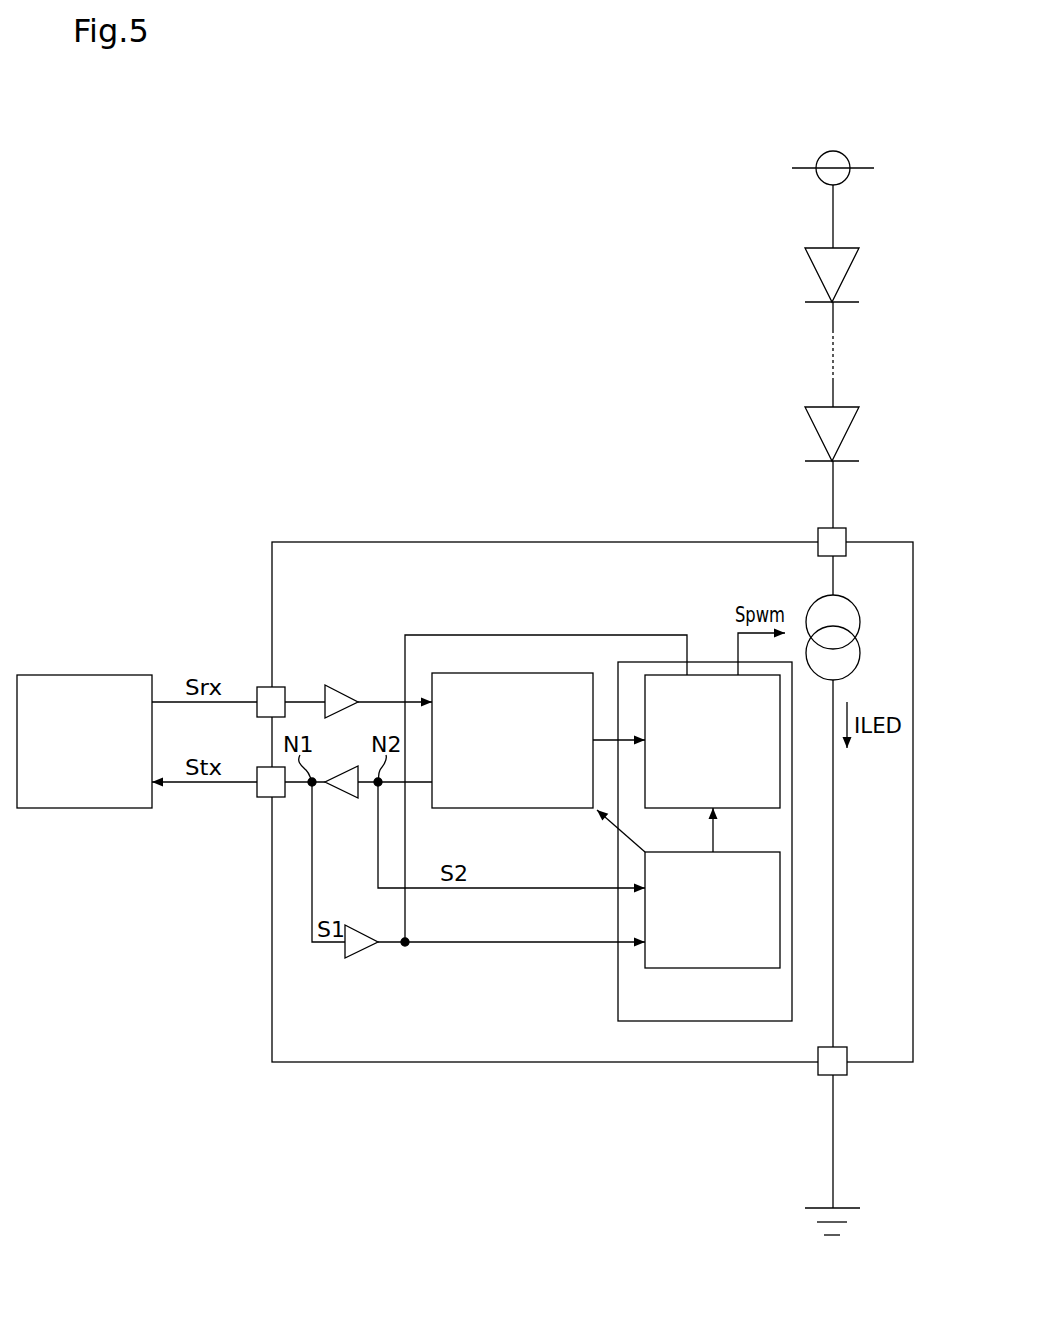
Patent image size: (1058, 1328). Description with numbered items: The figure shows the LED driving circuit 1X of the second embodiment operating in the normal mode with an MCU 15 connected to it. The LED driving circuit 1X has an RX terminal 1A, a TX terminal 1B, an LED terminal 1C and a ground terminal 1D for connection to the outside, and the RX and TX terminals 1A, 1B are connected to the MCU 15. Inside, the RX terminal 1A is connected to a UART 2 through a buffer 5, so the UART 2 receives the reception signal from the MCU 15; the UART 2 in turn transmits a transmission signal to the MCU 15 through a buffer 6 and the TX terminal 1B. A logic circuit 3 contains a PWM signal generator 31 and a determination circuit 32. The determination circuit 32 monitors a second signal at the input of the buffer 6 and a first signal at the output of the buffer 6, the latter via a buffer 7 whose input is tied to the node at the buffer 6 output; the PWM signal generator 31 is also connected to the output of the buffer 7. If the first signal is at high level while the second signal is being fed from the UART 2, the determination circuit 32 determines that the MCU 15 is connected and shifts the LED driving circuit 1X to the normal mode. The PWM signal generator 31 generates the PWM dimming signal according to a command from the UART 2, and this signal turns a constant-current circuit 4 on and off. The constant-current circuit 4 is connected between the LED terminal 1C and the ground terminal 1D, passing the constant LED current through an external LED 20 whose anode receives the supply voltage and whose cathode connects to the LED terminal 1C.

The LED driving circuit 1X is at (895, 541).
The RX terminal 1A is at (262, 687).
The TX terminal 1B is at (262, 797).
The LED terminal 1C is at (818, 528).
The ground terminal 1D is at (845, 1075).
The UART 2 is at (593, 673).
The logic circuit 3 is at (712, 661).
The constant-current circuit 4 is at (860, 636).
The buffer 5 is at (338, 685).
The buffer 6 is at (340, 798).
The buffer 7 is at (360, 925).
The MCU 15 is at (137, 673).
The LED 20 is at (848, 354).
The PWM signal generator 31 is at (672, 808).
The determination circuit 32 is at (670, 968).